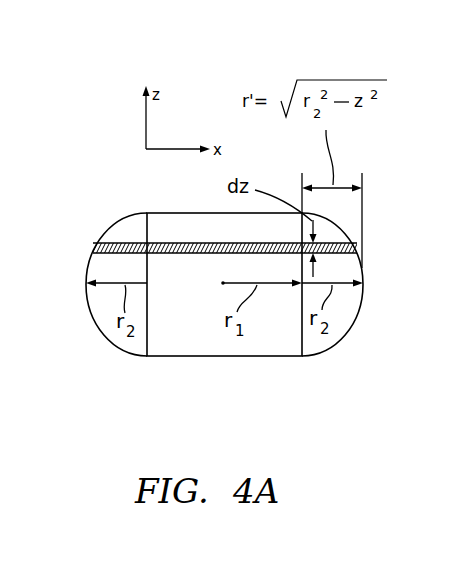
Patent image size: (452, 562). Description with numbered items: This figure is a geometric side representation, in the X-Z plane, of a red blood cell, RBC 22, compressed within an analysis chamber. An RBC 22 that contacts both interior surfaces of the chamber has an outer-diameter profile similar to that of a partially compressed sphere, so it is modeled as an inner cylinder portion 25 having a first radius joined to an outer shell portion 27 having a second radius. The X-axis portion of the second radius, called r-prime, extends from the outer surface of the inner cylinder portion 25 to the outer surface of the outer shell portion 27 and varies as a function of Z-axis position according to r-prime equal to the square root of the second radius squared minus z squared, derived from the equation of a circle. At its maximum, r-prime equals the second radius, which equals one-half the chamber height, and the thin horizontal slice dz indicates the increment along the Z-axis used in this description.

The RBC 22 is at (202, 292).
The inner cylinder portion 25 is at (192, 357).
The outer shell portion 27 is at (96, 329).